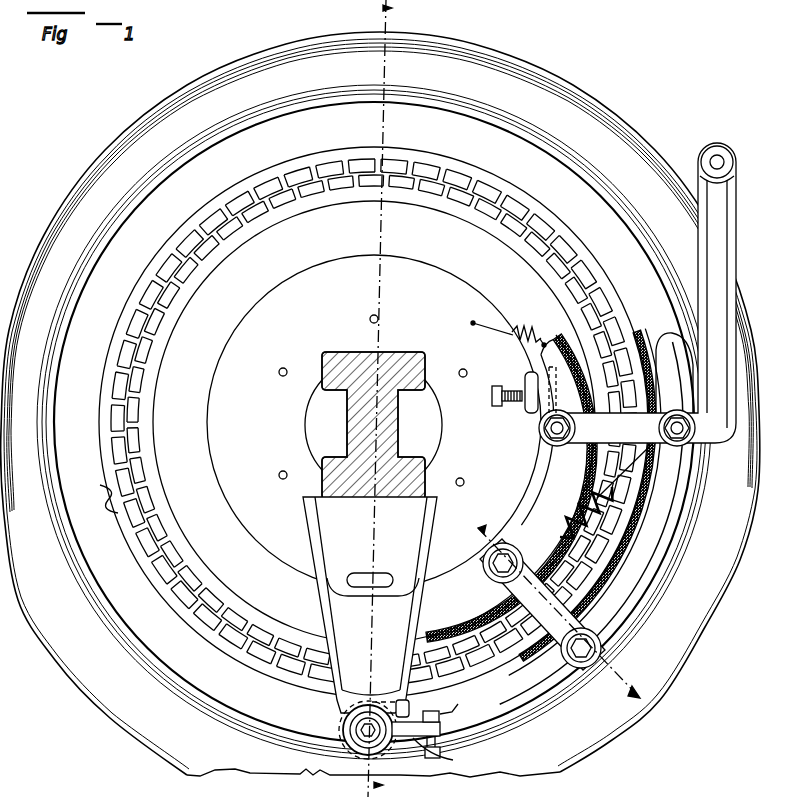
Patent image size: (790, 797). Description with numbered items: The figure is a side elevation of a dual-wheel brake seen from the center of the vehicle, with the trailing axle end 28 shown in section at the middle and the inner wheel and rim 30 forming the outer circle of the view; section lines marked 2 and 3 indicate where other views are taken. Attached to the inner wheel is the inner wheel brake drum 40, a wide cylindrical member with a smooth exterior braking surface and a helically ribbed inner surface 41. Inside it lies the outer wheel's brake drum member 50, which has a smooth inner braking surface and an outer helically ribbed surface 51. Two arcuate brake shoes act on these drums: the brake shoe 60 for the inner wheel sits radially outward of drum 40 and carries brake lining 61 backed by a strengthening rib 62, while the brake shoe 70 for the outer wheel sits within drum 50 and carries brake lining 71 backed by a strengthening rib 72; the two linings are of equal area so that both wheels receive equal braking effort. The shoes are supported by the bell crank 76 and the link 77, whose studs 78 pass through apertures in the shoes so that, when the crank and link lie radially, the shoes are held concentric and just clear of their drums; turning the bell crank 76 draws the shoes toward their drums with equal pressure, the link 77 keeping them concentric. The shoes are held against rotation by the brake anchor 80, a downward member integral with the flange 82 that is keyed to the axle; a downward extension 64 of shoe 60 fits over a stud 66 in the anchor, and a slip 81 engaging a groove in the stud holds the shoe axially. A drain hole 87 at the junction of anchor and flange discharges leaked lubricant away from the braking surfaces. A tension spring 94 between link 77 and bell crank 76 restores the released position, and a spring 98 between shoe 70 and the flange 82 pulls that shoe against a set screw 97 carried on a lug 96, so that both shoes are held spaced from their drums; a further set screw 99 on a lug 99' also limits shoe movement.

The inner wheel and rim 30 is at (581, 97).
The inner wheel brake drum 40 is at (102, 443).
The helically ribbed inner surface 41 is at (100, 487).
The brake drum member 50 is at (145, 461).
The outer helically ribbed surface 51 is at (150, 512).
The flange 82 is at (226, 428).
The trailing axle end 28 is at (403, 375).
The brake shoe 70 is at (570, 483).
The brake lining 71 is at (580, 461).
The strengthening rib 72 is at (533, 507).
The brake shoe 60 is at (650, 502).
The brake lining 61 is at (637, 517).
The strengthening rib 62 is at (657, 540).
The brake anchor 80 is at (330, 620).
The drain hole 87 is at (375, 572).
The downward extension 64 is at (401, 712).
The stud 66 is at (356, 730).
The slip 81 is at (338, 753).
The bell crank 76 is at (715, 288).
The link 77 is at (585, 602).
The studs 78 is at (546, 432).
The tension spring 94 is at (562, 535).
The lug 96 is at (530, 410).
The set screw 97 is at (492, 397).
The spring 98 is at (512, 338).
The set screw 99 is at (456, 767).
The lug 99' is at (446, 735).
The section line 2- 2 is at (552, 616).
The section line 3- 3 is at (386, 398).